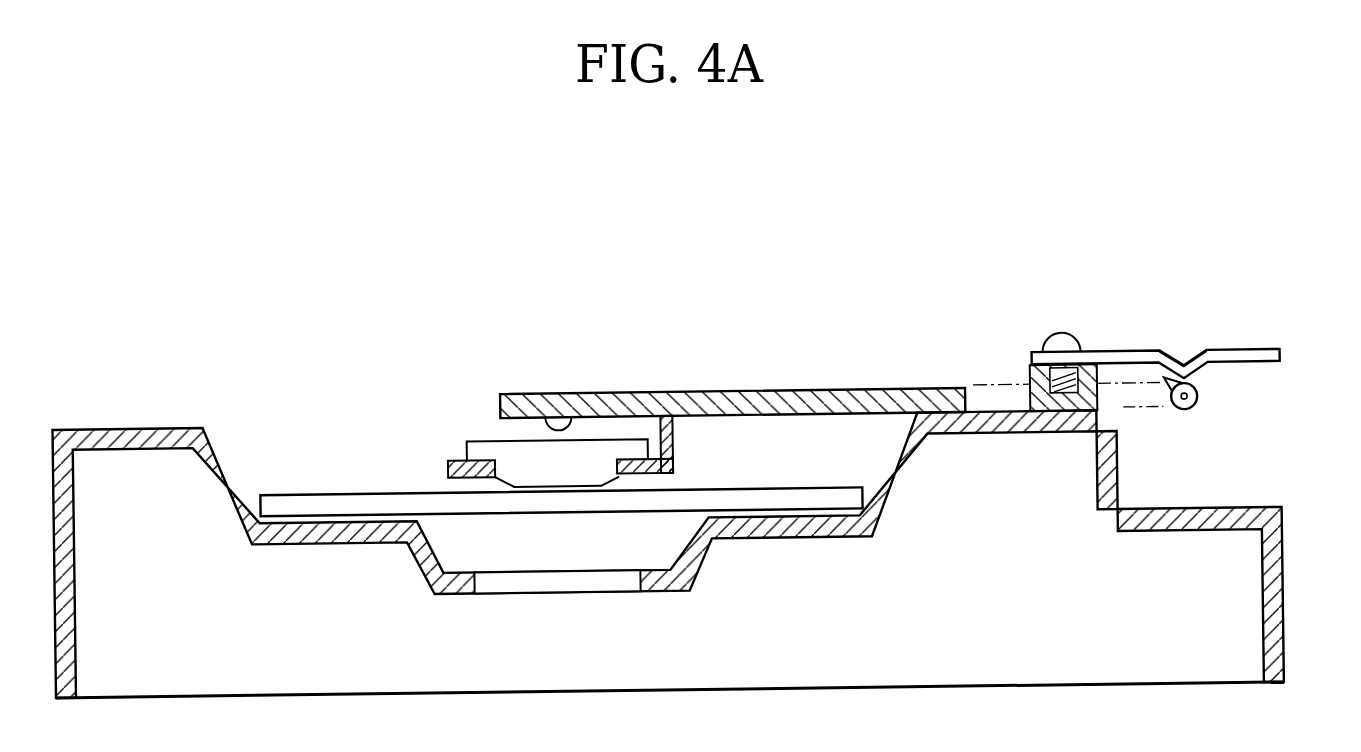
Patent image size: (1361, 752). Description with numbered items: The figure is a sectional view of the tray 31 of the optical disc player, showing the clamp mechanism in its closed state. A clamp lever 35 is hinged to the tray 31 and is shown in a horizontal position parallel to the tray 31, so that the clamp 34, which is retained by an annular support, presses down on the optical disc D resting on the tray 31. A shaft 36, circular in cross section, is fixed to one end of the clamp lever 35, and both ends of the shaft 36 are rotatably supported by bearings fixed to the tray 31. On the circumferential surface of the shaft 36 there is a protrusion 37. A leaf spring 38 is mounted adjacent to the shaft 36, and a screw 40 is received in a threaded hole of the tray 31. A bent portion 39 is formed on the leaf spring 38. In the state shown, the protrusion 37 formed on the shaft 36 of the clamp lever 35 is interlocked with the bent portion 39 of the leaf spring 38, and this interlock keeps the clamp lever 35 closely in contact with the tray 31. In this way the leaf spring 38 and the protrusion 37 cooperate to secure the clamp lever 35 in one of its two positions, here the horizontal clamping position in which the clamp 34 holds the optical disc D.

The tray 31 is at (113, 427).
The optical disc D is at (288, 500).
The clamp 34 is at (520, 451).
The clamp lever 35 is at (524, 411).
The shaft 36 is at (1201, 418).
The protrusion 37 is at (1169, 393).
The leaf spring 38 is at (1267, 371).
The bent portion 39 is at (1199, 390).
The screw 40 is at (1065, 350).